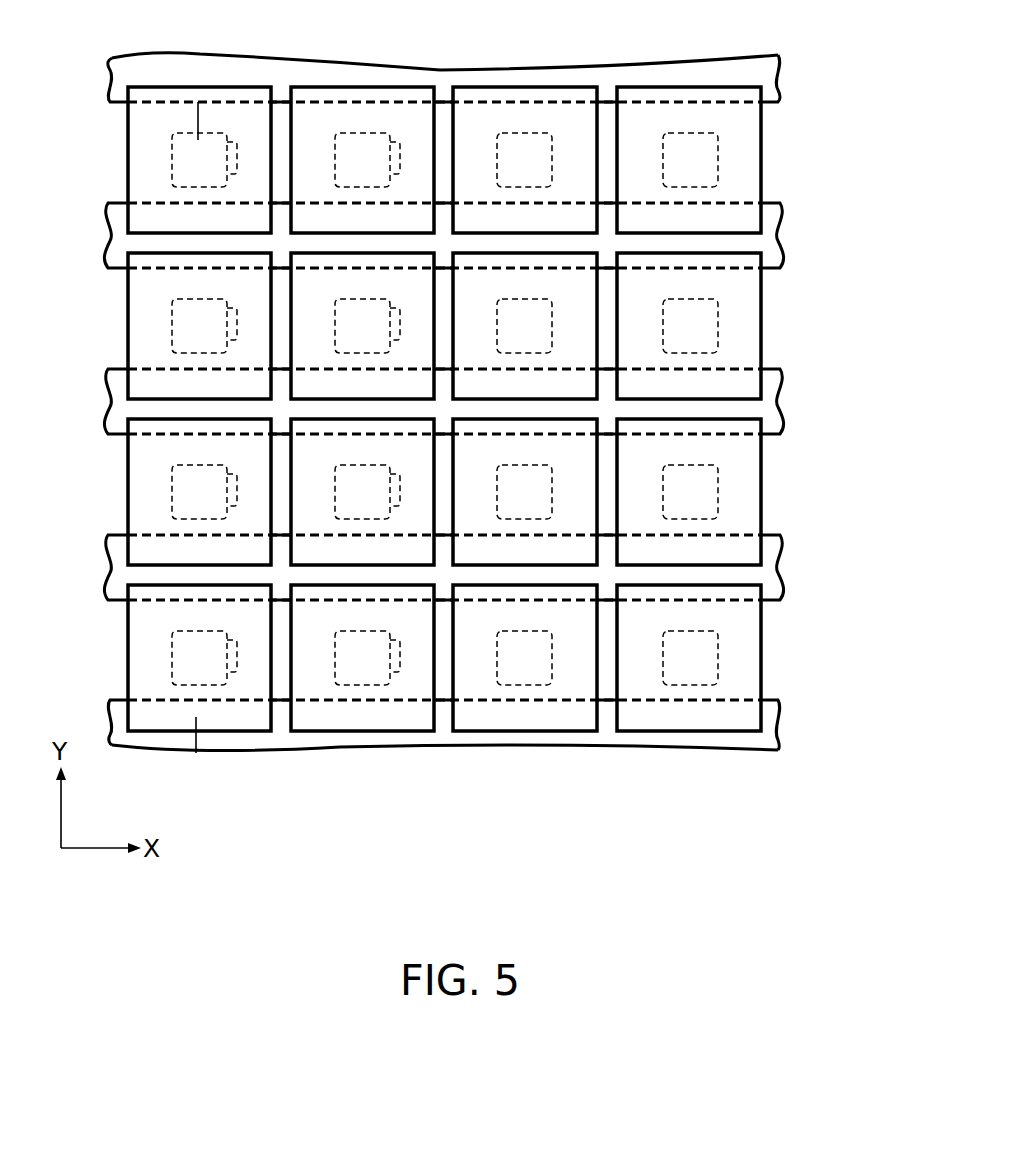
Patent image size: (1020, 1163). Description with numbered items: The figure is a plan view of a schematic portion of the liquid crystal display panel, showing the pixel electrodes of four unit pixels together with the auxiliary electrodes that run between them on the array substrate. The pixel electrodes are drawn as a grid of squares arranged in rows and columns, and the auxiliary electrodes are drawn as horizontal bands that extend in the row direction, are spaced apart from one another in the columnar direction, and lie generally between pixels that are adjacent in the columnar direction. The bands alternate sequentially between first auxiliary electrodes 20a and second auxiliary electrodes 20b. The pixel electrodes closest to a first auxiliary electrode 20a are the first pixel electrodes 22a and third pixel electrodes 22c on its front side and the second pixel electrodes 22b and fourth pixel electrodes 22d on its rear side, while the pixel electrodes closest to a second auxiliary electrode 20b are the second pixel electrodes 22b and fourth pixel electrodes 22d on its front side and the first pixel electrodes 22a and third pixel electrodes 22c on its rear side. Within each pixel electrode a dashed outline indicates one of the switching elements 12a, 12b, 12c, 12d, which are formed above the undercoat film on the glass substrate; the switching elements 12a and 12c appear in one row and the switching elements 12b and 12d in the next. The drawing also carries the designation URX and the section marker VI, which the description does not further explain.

The first auxiliary electrode 20a is at (781, 230).
The second auxiliary electrode 20b is at (780, 72).
The first pixel electrode 22a is at (128, 128).
The second pixel electrode 22b is at (128, 291).
The third pixel electrode 22c is at (291, 218).
The fourth pixel electrode 22d is at (291, 381).
The switching element 12a is at (217, 329).
The switching element 12b is at (217, 495).
The switching element 12c is at (380, 329).
The switching element 12d is at (380, 495).
The unit region URX is at (282, 82).
The section line VI is at (212, 117).